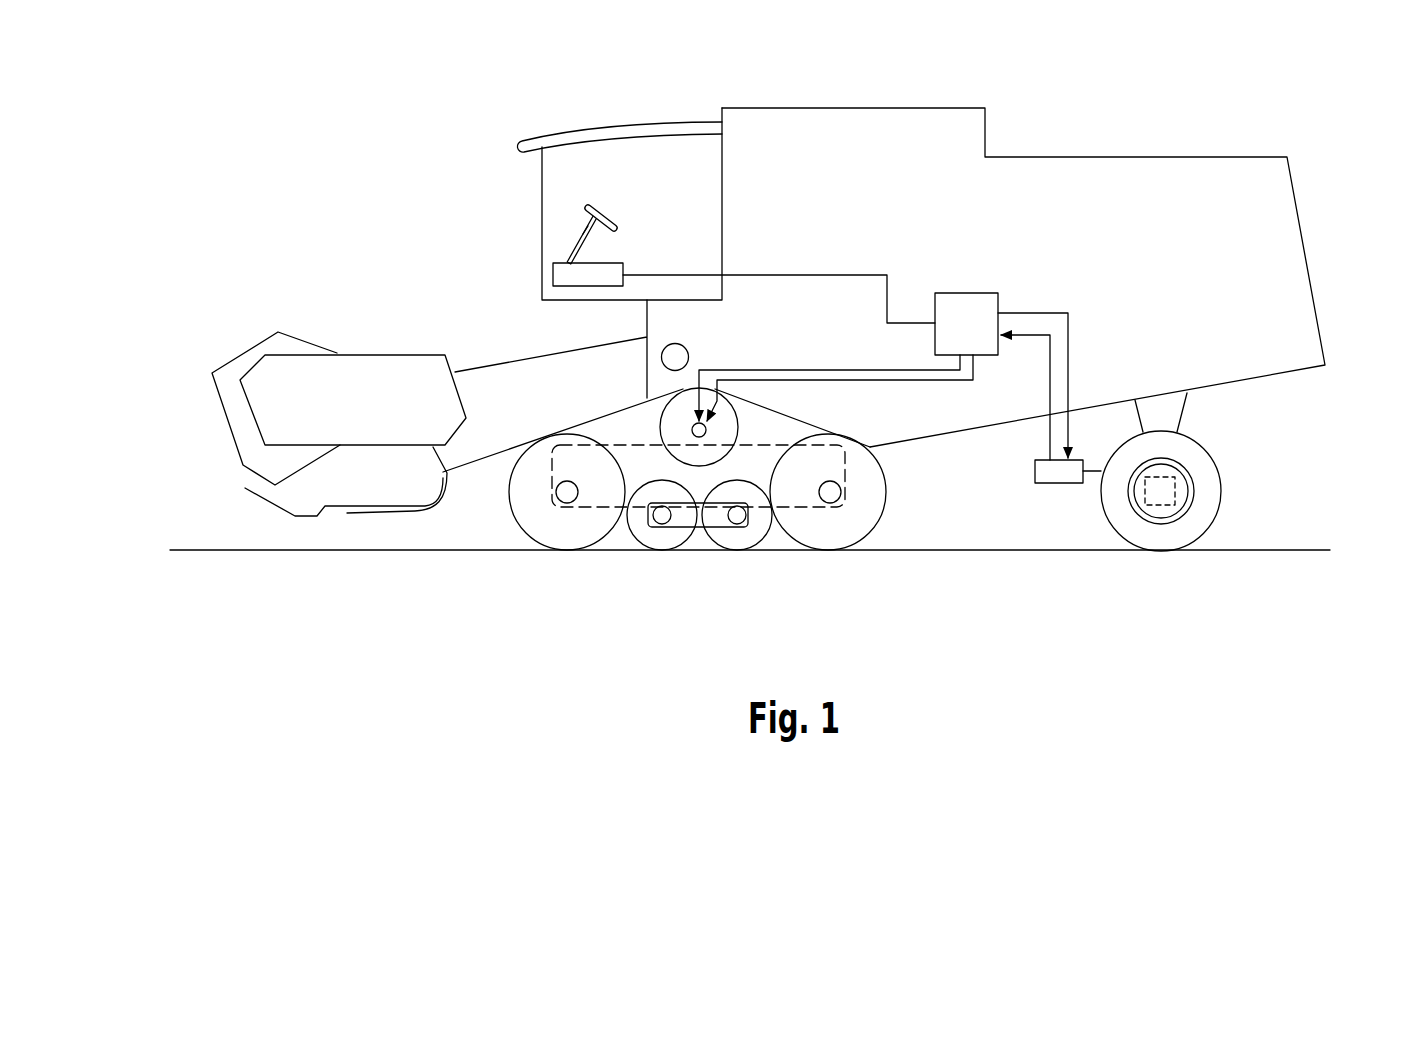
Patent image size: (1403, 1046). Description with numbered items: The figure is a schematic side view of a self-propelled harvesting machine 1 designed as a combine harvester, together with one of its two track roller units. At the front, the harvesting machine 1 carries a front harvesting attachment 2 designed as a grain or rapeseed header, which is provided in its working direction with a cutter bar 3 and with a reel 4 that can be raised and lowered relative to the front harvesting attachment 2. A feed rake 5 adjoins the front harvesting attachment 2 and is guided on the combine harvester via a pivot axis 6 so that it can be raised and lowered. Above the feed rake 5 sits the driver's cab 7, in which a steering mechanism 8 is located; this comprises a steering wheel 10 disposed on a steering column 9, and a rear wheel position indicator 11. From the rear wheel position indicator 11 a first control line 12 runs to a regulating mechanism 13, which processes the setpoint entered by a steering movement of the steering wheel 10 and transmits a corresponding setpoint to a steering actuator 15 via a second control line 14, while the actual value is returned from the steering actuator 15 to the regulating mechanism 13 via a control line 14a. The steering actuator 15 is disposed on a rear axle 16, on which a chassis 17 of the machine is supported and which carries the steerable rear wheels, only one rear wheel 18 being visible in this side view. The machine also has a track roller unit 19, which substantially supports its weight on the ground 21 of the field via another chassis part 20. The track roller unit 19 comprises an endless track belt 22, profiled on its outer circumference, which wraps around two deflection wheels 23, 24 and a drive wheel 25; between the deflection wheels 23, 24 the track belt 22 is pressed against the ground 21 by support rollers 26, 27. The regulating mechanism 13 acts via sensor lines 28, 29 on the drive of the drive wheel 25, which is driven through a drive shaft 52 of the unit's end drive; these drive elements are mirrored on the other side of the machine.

The harvesting machine 1 is at (994, 131).
The front harvesting attachment 2 is at (411, 521).
The cutter bar 3 is at (262, 488).
The reel 4 is at (274, 343).
The feed rake 5 is at (487, 420).
The pivot axis 6 is at (688, 351).
The driver's cab 7 is at (672, 145).
The steering mechanism 8 is at (568, 247).
The steering column 9 is at (582, 237).
The steering wheel 10 is at (595, 205).
The rear wheel position indicator 11 is at (567, 275).
The first control line 12 is at (820, 275).
The regulating mechanism 13 is at (963, 306).
The second control line 14 is at (1069, 345).
The control line 14a is at (1048, 375).
The steering actuator 15 is at (1060, 474).
The rear axle 16 is at (1160, 492).
The chassis 17 is at (1163, 410).
The rear wheel 18 is at (1203, 470).
The track roller unit 19 is at (681, 469).
The chassis part 20 is at (630, 462).
The ground 21 is at (350, 553).
The endless track belt 22 is at (763, 407).
The deflection wheel 23 is at (548, 517).
The deflection wheel 24 is at (833, 517).
The drive wheel 25 is at (686, 412).
The support roller 26 is at (660, 537).
The support roller 27 is at (738, 538).
The sensor line 28 is at (867, 370).
The sensor line 29 is at (914, 380).
The drive shaft 52 is at (691, 426).